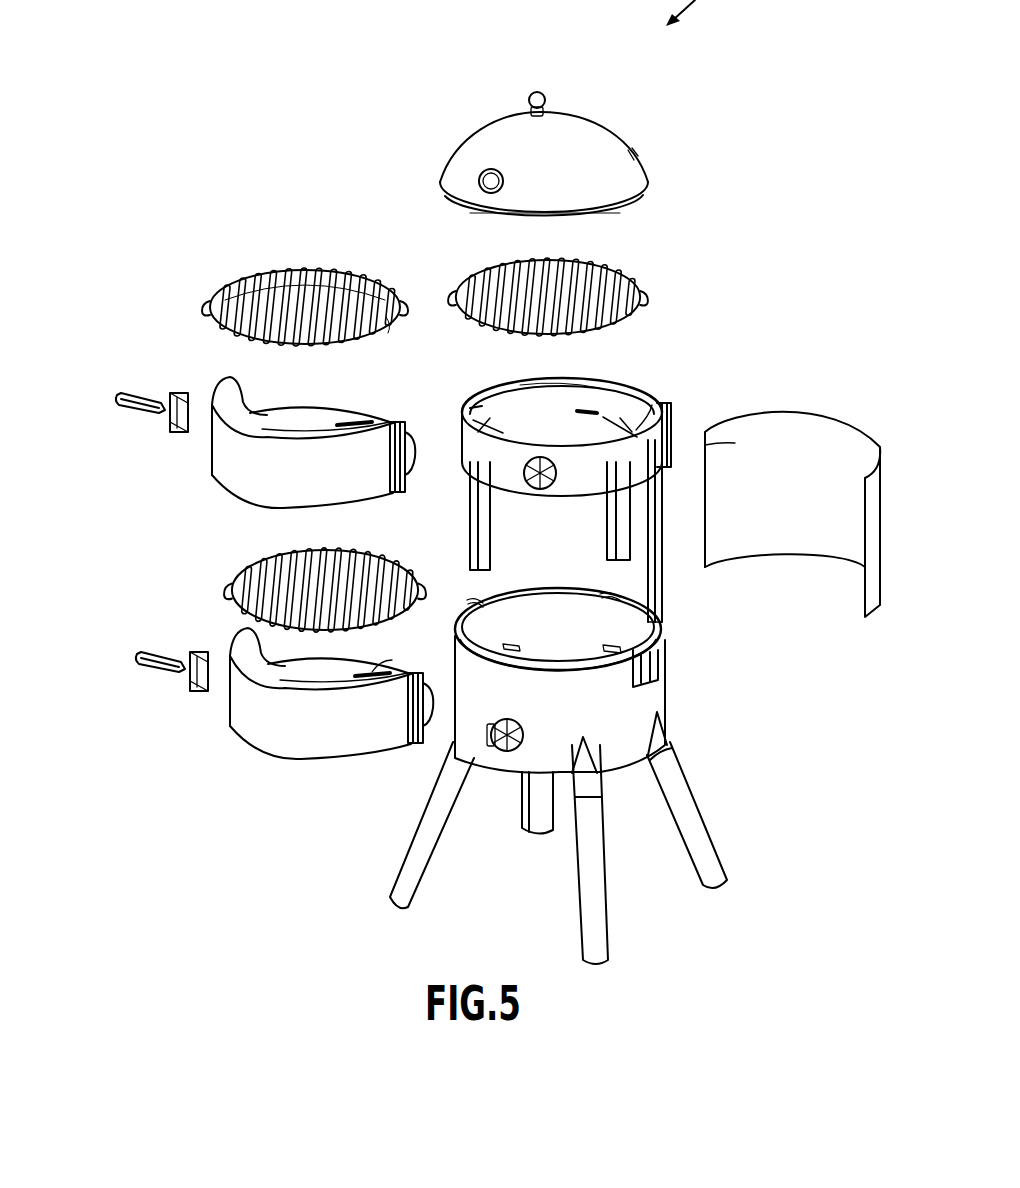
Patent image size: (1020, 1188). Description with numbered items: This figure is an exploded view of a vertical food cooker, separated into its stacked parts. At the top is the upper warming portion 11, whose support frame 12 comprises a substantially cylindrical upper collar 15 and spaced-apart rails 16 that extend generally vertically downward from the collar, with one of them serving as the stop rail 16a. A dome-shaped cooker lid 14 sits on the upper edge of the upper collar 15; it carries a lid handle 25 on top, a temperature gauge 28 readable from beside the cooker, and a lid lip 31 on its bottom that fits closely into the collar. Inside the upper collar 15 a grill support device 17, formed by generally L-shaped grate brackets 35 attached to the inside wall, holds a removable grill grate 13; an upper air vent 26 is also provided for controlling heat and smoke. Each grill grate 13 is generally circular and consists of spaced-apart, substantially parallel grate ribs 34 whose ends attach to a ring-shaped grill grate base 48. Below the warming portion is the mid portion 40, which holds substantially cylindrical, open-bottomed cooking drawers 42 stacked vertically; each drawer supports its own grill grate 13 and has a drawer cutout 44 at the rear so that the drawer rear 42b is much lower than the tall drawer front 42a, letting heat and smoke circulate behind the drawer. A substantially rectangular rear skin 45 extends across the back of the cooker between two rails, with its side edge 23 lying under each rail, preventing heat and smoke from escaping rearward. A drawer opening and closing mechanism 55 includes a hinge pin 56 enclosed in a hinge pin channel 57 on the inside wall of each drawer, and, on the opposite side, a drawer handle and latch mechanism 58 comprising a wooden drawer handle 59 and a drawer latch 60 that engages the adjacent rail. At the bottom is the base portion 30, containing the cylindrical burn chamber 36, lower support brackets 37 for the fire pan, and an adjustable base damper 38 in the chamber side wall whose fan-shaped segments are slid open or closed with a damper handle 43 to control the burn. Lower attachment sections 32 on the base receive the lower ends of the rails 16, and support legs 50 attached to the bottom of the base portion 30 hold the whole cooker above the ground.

The upper warming portion 11 is at (688, 128).
The support frame 12 is at (686, 381).
The removable grill grate 13 is at (228, 276).
The cooker lid 14 is at (594, 114).
The upper collar 15 is at (512, 384).
The rail 16 is at (473, 530).
The stop rail 16a is at (663, 586).
The grill support device 17 is at (642, 410).
The side edge of rear skin 23 is at (728, 446).
The lid handle 25 is at (537, 92).
The upper air vent 26 is at (652, 428).
The temperature gauge 28 is at (480, 181).
The base portion 30 is at (766, 636).
The lid lip 31 is at (630, 200).
The lower attachment section 32 is at (668, 612).
The grate ribs 34 is at (290, 265).
The grate bracket 35 is at (470, 408).
The burn chamber 36 is at (570, 606).
The lower support bracket 37 is at (516, 612).
The base damper 38 is at (472, 765).
The mid portion 40 is at (168, 306).
The cooking drawer 42 is at (218, 484).
The drawer front 42a is at (280, 752).
The drawer rear 42b is at (306, 670).
The damper handle 43 is at (468, 757).
The drawer cutout 44 is at (258, 394).
The rear skin 45 is at (812, 412).
The grill grate base 48 is at (380, 327).
The support leg 50 is at (390, 898).
The drawer opening and closing mechanism 55 is at (118, 392).
The hinge pin 56 is at (396, 421).
The hinge pin channel 57 is at (385, 483).
The drawer handle and latch mechanism 58 is at (140, 647).
The drawer handle 59 is at (132, 411).
The drawer latch 60 is at (174, 428).